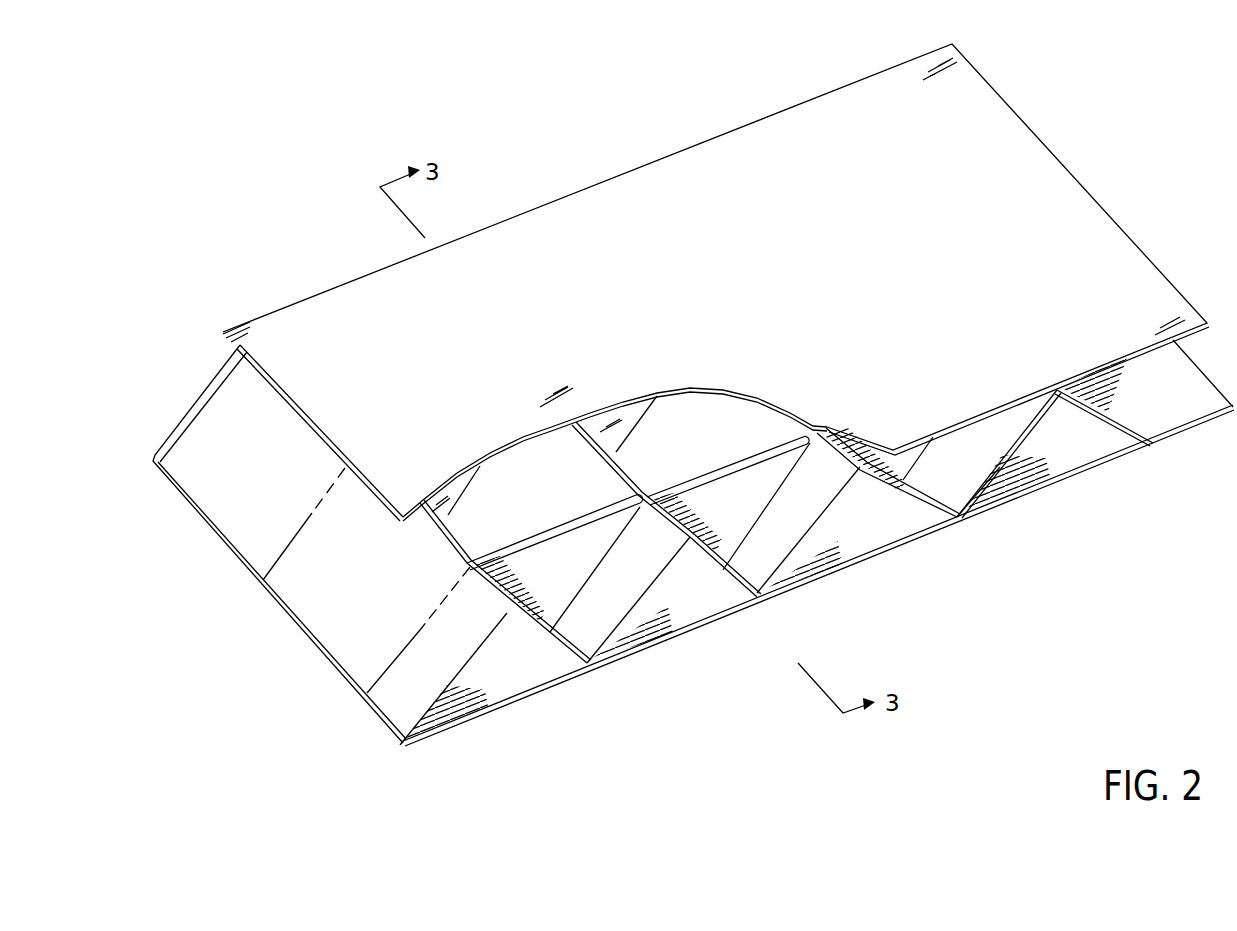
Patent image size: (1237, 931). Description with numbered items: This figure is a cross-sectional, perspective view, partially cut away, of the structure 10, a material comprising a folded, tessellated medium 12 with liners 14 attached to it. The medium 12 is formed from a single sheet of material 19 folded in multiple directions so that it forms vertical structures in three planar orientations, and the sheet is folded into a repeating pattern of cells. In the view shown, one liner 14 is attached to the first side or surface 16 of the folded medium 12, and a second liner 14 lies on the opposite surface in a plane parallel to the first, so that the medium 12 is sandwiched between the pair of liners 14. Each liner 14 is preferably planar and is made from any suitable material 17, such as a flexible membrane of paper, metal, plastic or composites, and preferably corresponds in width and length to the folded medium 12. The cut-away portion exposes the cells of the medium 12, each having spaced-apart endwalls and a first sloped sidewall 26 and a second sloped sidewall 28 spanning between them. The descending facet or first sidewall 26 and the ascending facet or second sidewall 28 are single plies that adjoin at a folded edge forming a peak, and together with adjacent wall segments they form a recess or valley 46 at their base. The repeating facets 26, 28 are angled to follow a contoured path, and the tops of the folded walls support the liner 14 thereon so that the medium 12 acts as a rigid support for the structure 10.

The structure 10 is at (1172, 220).
The folded, tessellated medium 12 is at (718, 580).
The liner 14 is at (898, 299).
The first side or surface 16 is at (665, 432).
The material 17 is at (772, 170).
The sheet of material 19 is at (355, 617).
The first sloped sidewall 26 is at (553, 650).
The second sloped sidewall 28 is at (618, 657).
The recess or valley 46 is at (968, 504).